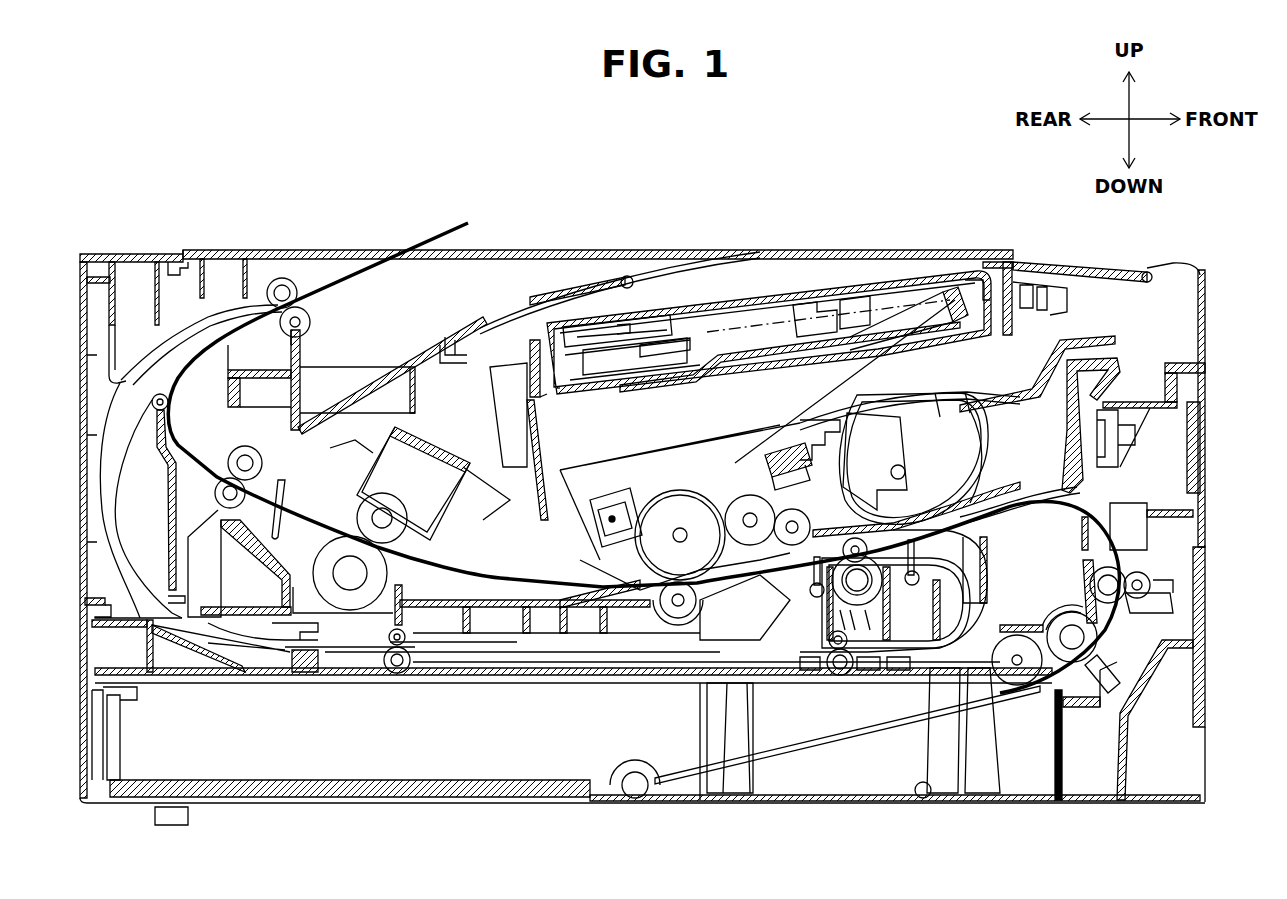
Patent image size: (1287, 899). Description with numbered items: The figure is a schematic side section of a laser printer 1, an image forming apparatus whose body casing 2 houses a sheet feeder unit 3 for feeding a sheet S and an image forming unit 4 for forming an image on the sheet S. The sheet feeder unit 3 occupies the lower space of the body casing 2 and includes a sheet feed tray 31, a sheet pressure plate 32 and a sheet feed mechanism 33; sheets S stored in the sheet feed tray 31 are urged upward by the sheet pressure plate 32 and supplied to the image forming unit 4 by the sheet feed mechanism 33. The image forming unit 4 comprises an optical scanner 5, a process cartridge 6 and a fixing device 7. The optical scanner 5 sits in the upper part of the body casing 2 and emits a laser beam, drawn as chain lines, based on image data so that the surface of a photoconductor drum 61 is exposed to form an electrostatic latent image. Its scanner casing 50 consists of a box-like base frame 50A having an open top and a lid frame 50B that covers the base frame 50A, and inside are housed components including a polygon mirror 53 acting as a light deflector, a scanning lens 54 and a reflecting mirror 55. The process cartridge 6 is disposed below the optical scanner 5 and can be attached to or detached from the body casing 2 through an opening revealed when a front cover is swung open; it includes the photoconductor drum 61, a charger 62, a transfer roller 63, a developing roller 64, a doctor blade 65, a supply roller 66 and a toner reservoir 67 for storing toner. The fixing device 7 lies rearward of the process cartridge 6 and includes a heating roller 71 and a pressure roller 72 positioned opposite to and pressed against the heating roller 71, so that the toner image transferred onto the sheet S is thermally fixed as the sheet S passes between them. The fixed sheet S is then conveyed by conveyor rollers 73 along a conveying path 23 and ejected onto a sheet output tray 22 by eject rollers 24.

The laser printer 1 is at (798, 156).
The body casing 2 is at (861, 248).
The sheet feeder unit 3 is at (1211, 567).
The image forming unit 4 is at (1164, 311).
The optical scanner 5 is at (742, 298).
The process cartridge 6 is at (1091, 332).
The fixing device 7 is at (456, 444).
The sheet output tray 22 is at (504, 321).
The conveying path 23 is at (178, 346).
The eject rollers 24 is at (300, 308).
The sheet feed tray 31 is at (1206, 688).
The sheet pressure plate 32 is at (795, 746).
The sheet feed mechanism 33 is at (1046, 607).
The scanner casing 50 is at (797, 298).
The base frame 50A is at (767, 352).
The lid frame 50B is at (573, 323).
The polygon mirror 53 is at (656, 330).
The scanning lens 54 is at (826, 304).
The reflecting mirror 55 is at (948, 288).
The photoconductor drum 61 is at (677, 518).
The charger 62 is at (630, 498).
The transfer roller 63 is at (676, 614).
The developing roller 64 is at (745, 504).
The doctor blade 65 is at (768, 500).
The supply roller 66 is at (811, 523).
The toner reservoir 67 is at (913, 458).
The heating roller 71 is at (400, 514).
The pressure roller 72 is at (318, 578).
The conveyor rollers 73 is at (220, 516).
The sheet S is at (446, 240).